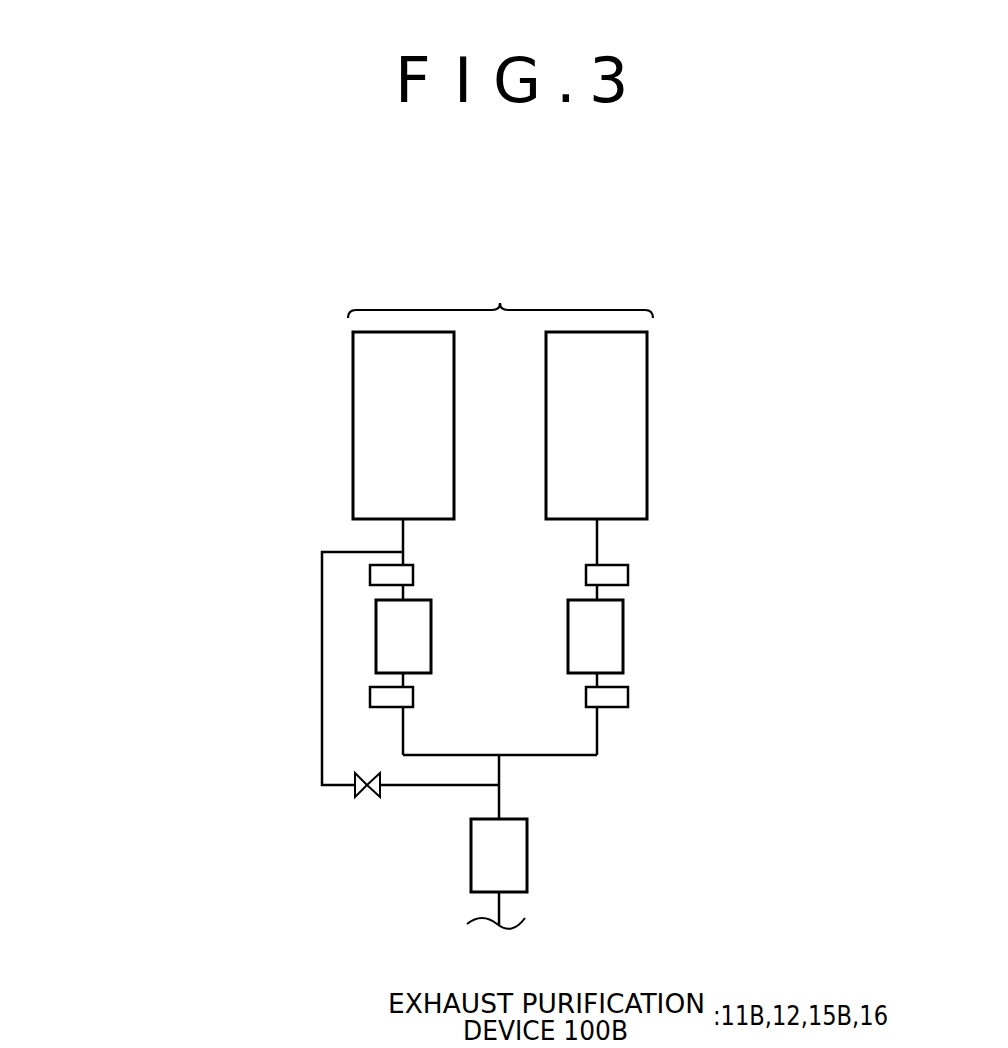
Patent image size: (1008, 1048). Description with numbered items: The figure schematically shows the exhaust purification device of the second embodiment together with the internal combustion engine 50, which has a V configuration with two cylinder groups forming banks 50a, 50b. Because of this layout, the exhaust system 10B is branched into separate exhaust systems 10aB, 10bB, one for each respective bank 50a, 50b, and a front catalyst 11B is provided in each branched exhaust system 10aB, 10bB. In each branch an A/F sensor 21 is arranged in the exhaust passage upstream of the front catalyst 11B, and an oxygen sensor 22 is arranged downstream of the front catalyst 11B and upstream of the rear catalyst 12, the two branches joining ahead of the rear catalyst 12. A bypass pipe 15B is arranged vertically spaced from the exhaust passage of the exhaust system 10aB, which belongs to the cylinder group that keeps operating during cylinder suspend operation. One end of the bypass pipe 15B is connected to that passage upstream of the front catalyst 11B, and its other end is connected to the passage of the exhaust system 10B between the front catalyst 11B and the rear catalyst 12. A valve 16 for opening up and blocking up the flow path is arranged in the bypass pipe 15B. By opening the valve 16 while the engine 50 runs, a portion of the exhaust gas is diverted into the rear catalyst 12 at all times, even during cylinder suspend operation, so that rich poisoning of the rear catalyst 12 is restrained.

The internal combustion engine 50 is at (495, 396).
The bank 50a is at (353, 397).
The bank 50b is at (647, 402).
The exhaust system 10B is at (170, 538).
The exhaust system 10aB is at (403, 537).
The exhaust system 10bB is at (597, 552).
The A/F sensor 21 is at (370, 572).
The front catalyst 11B is at (376, 632).
The oxygen sensor 22 is at (370, 695).
The bypass pipe 15B is at (322, 758).
The valve 16 is at (372, 798).
The rear catalyst 12 is at (527, 848).